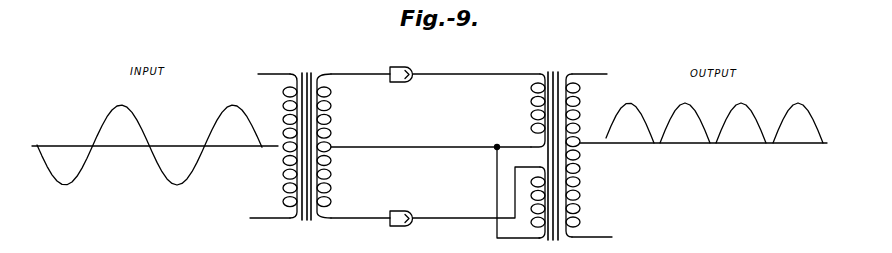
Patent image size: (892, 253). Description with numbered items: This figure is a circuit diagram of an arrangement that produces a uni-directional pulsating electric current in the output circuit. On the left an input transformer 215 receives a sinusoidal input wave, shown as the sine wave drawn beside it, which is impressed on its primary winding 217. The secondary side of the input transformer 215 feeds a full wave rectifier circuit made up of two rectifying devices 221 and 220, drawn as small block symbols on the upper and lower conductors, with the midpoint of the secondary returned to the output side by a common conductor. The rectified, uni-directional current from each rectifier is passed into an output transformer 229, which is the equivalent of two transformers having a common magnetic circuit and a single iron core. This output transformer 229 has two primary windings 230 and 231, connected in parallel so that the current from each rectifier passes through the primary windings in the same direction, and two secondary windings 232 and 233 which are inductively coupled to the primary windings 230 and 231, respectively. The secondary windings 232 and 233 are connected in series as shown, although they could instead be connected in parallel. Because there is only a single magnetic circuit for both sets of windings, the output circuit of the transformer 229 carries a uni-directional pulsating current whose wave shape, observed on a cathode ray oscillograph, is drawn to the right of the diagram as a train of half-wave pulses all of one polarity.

The input transformer 215 is at (327, 64).
The primary winding 217 is at (285, 118).
The secondary winding 220 is at (411, 201).
The rectifying device 221 is at (392, 67).
The output transformer 229 is at (573, 63).
The primary winding 230 is at (531, 100).
The primary winding 231 is at (531, 195).
The secondary winding 232 is at (582, 98).
The secondary winding 233 is at (583, 195).